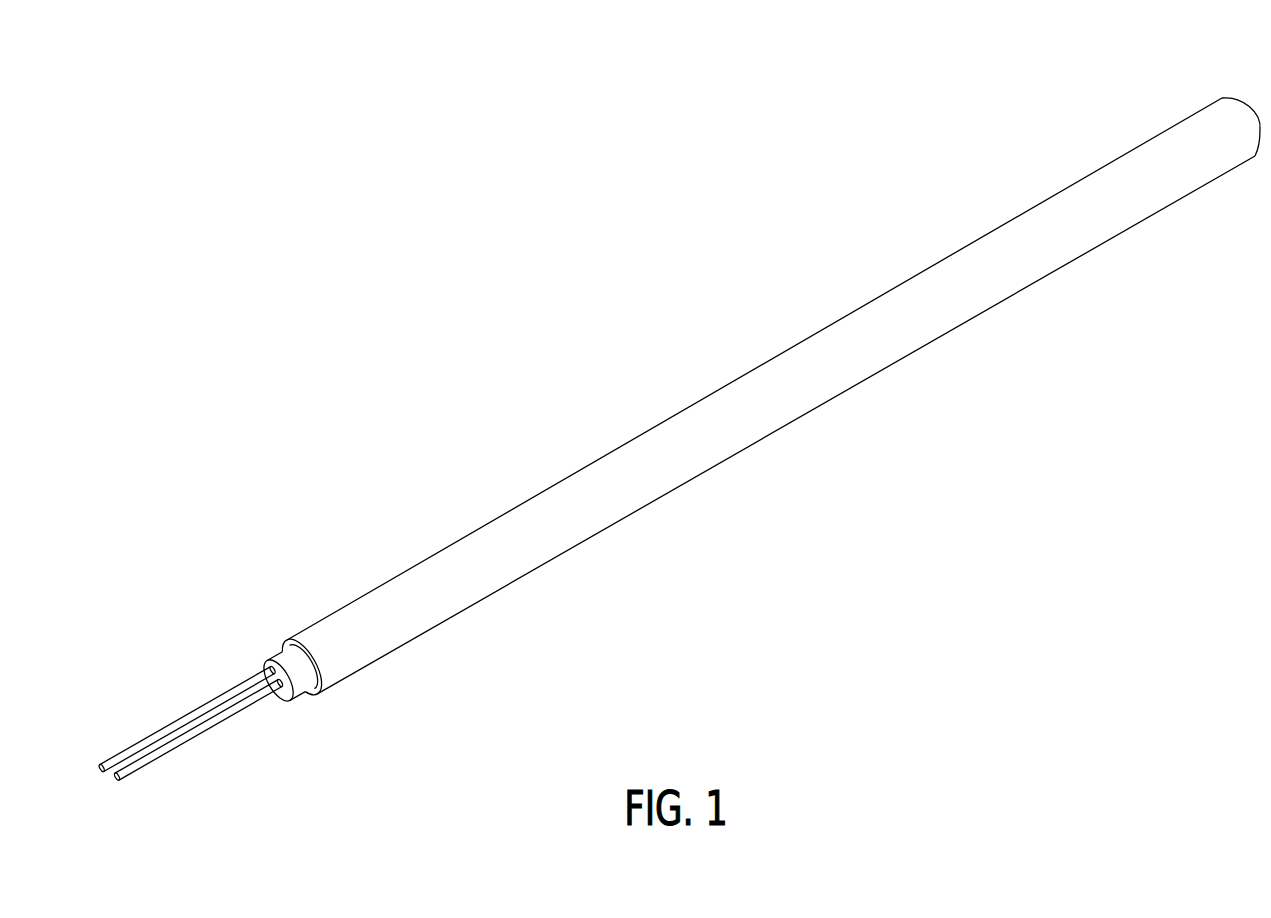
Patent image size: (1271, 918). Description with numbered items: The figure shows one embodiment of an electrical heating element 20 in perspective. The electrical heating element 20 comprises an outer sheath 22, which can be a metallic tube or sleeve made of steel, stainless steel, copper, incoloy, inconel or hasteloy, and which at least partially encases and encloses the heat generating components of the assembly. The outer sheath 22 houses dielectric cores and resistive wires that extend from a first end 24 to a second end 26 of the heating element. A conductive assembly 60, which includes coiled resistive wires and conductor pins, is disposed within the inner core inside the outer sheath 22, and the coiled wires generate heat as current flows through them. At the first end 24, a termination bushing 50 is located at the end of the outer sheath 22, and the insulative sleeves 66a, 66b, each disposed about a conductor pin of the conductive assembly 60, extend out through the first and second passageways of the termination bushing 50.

The electrical heating element 20 is at (679, 434).
The outer sheath 22 is at (1087, 232).
The first end 24 is at (387, 692).
The second end 26 is at (1177, 97).
The termination bushing 50 is at (277, 655).
The conductive assembly 60 is at (190, 749).
The insulative sleeve 66a is at (198, 718).
The insulative sleeve 66b is at (243, 708).